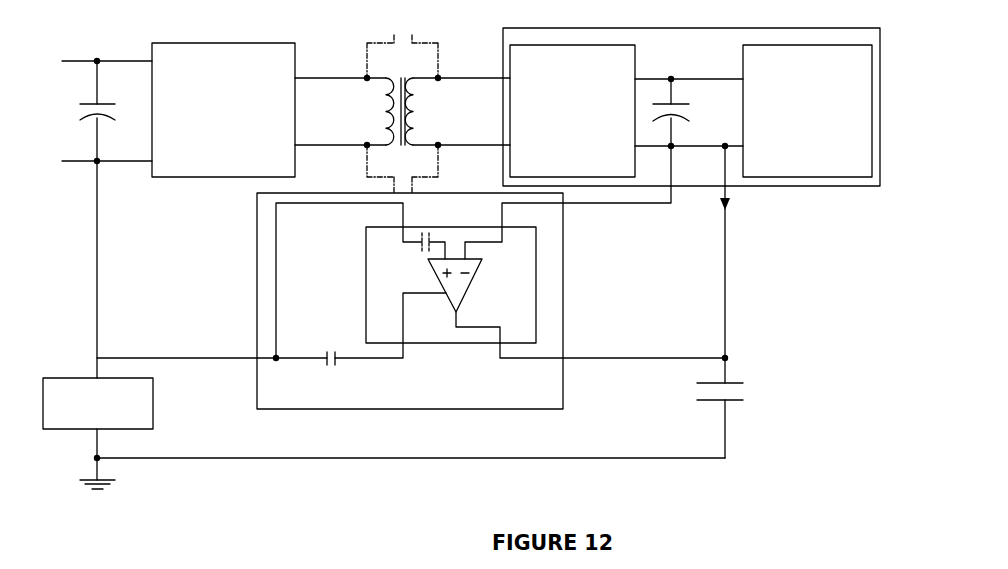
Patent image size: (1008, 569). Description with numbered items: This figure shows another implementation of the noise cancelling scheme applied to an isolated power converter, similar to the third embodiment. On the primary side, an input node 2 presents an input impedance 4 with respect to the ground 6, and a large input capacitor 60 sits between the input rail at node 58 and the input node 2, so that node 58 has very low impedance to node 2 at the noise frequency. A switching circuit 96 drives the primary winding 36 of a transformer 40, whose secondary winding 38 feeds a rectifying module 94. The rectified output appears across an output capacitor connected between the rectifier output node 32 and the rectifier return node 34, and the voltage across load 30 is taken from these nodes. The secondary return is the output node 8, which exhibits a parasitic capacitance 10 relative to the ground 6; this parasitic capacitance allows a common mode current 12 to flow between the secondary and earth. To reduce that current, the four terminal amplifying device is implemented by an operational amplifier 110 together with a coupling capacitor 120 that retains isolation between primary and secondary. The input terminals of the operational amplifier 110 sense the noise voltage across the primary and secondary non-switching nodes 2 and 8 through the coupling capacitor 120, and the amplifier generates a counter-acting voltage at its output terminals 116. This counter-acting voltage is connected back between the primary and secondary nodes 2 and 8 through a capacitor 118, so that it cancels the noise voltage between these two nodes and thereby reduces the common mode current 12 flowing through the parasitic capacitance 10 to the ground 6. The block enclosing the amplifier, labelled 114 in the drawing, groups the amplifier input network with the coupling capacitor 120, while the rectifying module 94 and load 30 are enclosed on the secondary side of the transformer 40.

The input node 2 is at (88, 164).
The input impedance 4 is at (153, 387).
The ground 6 is at (104, 454).
The output node 8 is at (733, 350).
The parasitic capacitance 10 is at (753, 387).
The common mode current 12 is at (733, 204).
The voltage across load 30 is at (807, 111).
The rectifier output node 32 is at (688, 57).
The rectifier return node 34 is at (693, 112).
The primary winding 36 is at (378, 105).
The secondary winding 38 is at (427, 103).
The transformer 40 is at (397, 73).
The node 58 is at (118, 28).
The input capacitor 60 is at (82, 110).
The rectifying module 94 is at (691, 107).
The switching circuit 96 is at (223, 110).
The operational amplifier 110 is at (468, 282).
The feedback loop 114 is at (497, 222).
The output terminals 116 is at (497, 352).
The capacitor 118 is at (328, 365).
The coupling capacitor 120 is at (422, 250).